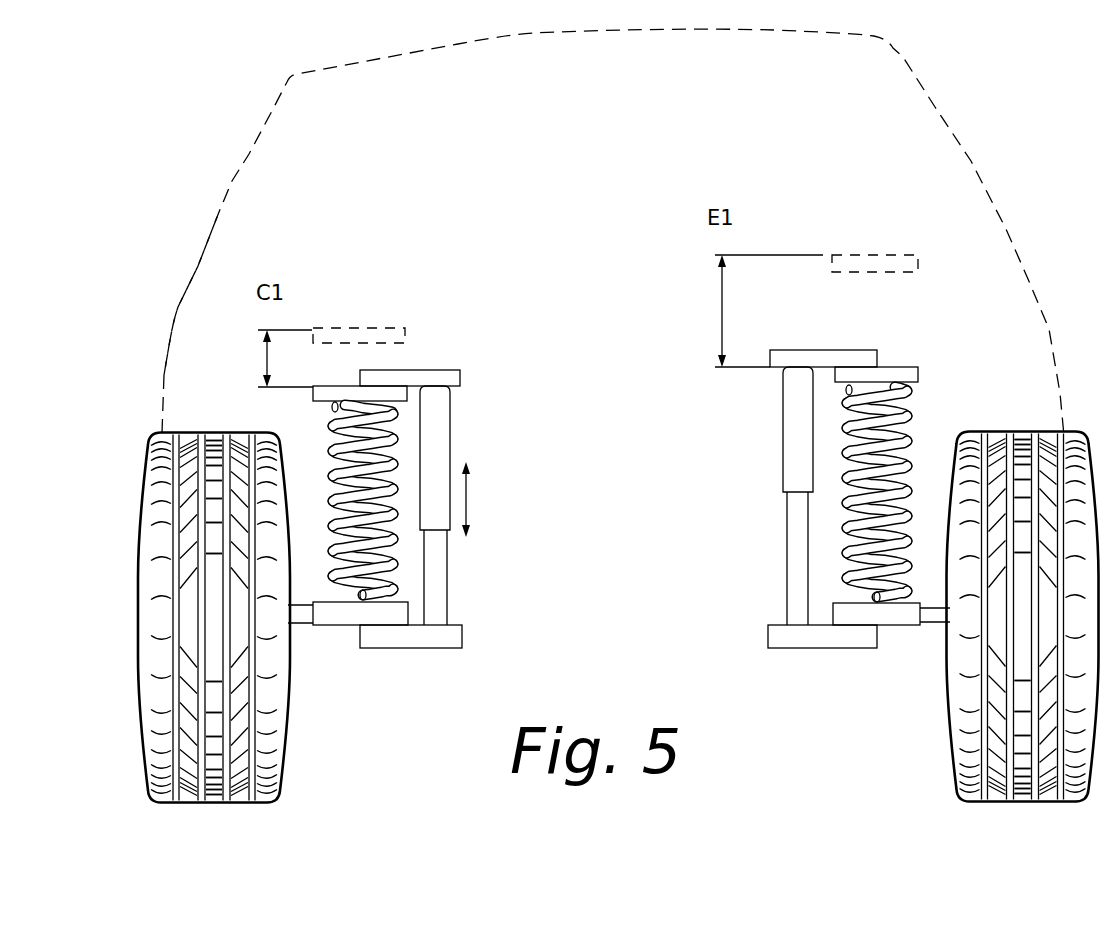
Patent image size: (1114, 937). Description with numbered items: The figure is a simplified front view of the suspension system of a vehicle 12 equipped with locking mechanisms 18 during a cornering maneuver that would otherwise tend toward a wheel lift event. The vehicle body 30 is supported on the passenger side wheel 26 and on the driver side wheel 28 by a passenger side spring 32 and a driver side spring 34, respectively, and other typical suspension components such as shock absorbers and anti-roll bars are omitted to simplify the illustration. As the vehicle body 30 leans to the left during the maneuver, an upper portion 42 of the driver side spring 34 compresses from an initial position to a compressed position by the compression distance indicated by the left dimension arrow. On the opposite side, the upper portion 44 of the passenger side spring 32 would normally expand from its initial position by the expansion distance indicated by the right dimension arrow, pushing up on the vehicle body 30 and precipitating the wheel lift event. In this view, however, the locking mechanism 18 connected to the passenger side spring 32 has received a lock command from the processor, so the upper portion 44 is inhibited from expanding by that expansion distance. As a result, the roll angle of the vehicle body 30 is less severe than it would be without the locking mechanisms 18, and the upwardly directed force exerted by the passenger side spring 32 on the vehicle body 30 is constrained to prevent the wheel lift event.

The vehicle 12 is at (985, 165).
The locking mechanism 18 is at (443, 438).
The passenger side wheel 26 is at (963, 683).
The driver side wheel 28 is at (275, 692).
The vehicle body 30 is at (214, 218).
The passenger side spring 32 is at (900, 417).
The driver side spring 34 is at (370, 595).
The upper portion of driver side spring 42 is at (375, 333).
The upper portion of passenger side spring 44 is at (885, 273).